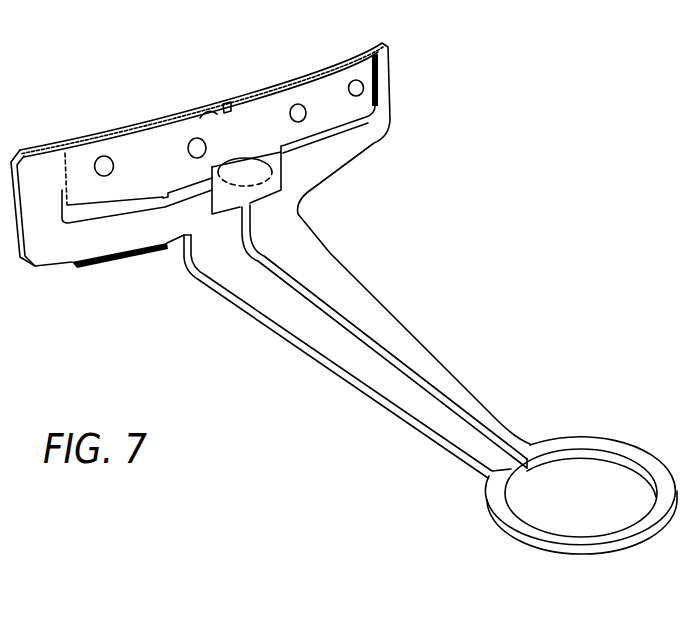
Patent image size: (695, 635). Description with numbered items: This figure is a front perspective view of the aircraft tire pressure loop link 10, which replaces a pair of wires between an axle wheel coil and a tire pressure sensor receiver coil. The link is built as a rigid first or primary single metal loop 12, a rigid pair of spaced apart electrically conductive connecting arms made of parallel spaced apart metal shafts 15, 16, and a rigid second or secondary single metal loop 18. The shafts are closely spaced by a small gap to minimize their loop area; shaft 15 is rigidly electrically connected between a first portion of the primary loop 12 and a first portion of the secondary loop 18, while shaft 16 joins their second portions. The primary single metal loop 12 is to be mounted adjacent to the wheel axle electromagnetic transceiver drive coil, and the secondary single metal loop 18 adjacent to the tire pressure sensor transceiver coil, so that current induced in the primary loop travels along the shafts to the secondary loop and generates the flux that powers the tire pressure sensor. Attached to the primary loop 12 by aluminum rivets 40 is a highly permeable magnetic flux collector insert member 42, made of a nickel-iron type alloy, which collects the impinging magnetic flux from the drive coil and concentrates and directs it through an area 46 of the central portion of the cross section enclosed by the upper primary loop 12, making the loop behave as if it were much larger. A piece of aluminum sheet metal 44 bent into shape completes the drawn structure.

The aircraft tire pressure loop link 10 is at (546, 229).
The first or primary single metal loop 12 is at (412, 166).
The shaft 15 is at (366, 298).
The shaft 16 is at (338, 350).
The second or secondary single metal loop 18 is at (465, 536).
The aluminum rivet 40 is at (105, 156).
The magnetic flux collector insert member 42 is at (142, 153).
The piece of aluminum sheet metal 44 is at (412, 353).
The area of a central portion of the cross sectional area 46 is at (268, 170).